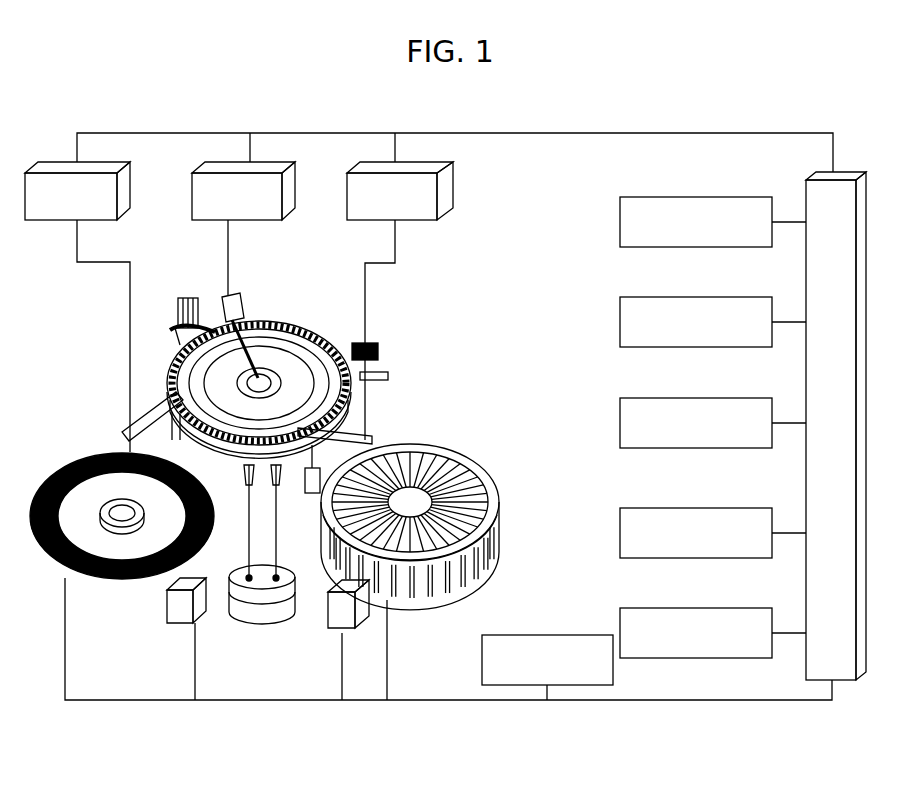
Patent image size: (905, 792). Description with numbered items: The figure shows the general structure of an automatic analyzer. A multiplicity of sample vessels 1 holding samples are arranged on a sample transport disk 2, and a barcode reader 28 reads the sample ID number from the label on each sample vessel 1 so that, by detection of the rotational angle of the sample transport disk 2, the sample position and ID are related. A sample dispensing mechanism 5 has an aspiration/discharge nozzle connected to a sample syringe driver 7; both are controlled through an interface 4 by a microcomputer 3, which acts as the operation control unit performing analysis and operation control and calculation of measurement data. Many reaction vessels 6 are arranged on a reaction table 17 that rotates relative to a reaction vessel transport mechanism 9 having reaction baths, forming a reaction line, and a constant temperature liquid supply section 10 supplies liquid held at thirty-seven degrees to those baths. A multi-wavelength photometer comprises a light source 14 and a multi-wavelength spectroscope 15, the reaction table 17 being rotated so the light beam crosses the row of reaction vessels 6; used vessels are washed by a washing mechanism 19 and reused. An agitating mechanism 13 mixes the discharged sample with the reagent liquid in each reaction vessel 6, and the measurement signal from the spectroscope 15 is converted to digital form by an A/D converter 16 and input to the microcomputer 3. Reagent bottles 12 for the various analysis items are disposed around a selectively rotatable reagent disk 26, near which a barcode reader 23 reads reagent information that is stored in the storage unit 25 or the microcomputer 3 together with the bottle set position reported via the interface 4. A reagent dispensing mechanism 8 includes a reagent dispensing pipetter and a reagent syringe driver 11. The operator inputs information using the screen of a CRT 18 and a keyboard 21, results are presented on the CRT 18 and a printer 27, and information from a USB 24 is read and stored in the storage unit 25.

The sample vessel 1 is at (78, 466).
The sample transport disk 2 is at (128, 585).
The microcomputer 3 is at (628, 398).
The interface 4 is at (812, 178).
The sample dispensing mechanism 5 is at (160, 400).
The reaction vessel 6 is at (291, 328).
The sample syringe driver 7 is at (60, 208).
The reagent dispensing mechanism 8 is at (312, 494).
The reaction vessel transport mechanism 9 is at (232, 455).
The constant temperature liquid supply section 10 is at (258, 612).
The reagent syringe driver 11 is at (446, 195).
The reagent bottle 12 is at (495, 533).
The agitating mechanism 13 is at (360, 343).
The light source 14 is at (258, 325).
The multi-wavelength spectroscope 15 is at (224, 297).
The A/D converter 16 is at (292, 178).
The reaction table 17 is at (268, 325).
The CRT 18 is at (628, 197).
The washing mechanism 19 is at (172, 322).
The keyboard 21 is at (628, 297).
The barcode reader 23 is at (332, 615).
The USB 24 is at (628, 508).
The storage unit 25 is at (628, 608).
The reagent disk 26 is at (448, 596).
The printer 27 is at (560, 635).
The barcode reader 28 is at (185, 612).